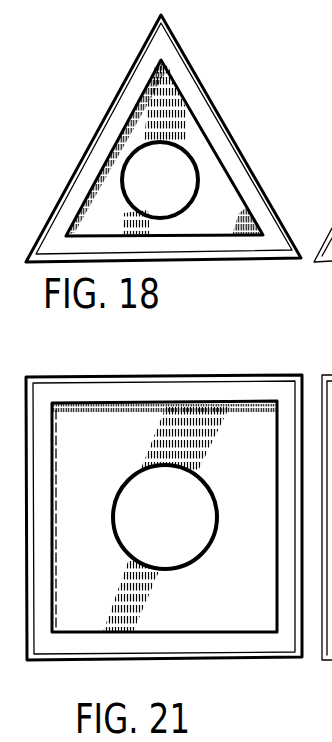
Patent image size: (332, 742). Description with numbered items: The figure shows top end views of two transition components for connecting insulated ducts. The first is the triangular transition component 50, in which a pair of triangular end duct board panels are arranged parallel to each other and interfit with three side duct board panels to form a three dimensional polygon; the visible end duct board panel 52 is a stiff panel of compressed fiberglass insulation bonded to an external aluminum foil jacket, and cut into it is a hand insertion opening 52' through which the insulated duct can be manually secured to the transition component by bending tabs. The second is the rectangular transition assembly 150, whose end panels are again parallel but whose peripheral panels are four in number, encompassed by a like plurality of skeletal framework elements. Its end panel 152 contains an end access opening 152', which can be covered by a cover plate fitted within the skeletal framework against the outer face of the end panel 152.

In FIG. 18, the transition component 50 is at (194, 59).
In FIG. 18, the end duct board panel 52 is at (186, 148).
In FIG. 18, the hand insertion opening 52' is at (210, 145).
In FIG. 21, the transition assembly 150 is at (215, 370).
In FIG. 21, the end panel 152 is at (174, 554).
In FIG. 21, the opening 152' is at (119, 586).